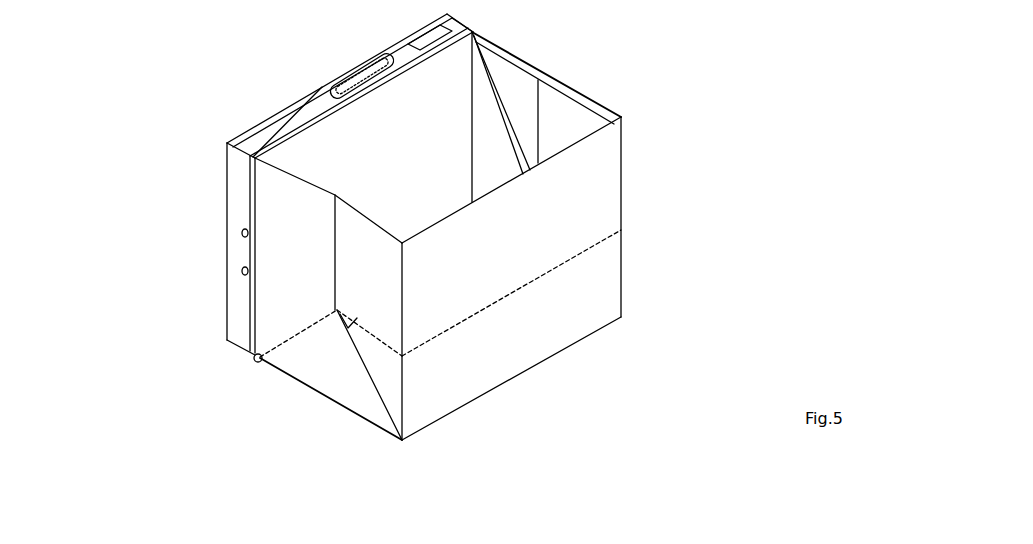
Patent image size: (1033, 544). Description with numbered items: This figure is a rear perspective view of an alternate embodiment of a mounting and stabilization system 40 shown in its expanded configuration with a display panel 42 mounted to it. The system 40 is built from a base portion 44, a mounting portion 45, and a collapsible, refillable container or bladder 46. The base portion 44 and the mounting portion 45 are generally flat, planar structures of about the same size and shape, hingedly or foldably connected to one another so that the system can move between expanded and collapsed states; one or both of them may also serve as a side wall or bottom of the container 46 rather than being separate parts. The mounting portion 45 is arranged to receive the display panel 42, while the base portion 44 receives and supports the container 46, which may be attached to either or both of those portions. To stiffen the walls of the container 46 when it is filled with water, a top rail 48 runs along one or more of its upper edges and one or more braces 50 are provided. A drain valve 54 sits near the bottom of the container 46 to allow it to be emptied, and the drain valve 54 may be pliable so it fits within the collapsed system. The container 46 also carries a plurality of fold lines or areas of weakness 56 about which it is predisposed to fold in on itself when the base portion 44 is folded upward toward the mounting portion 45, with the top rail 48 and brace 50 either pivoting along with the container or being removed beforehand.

The mounting and stabilization system 40 is at (150, 146).
The display panel 42 is at (228, 213).
The base portion 44 is at (278, 375).
The mounting portion 45 is at (277, 140).
The container 46 is at (602, 263).
The top rail 48 is at (593, 103).
The brace 50 is at (510, 112).
The drain valve 54 is at (256, 357).
The fold lines 56 is at (540, 108).